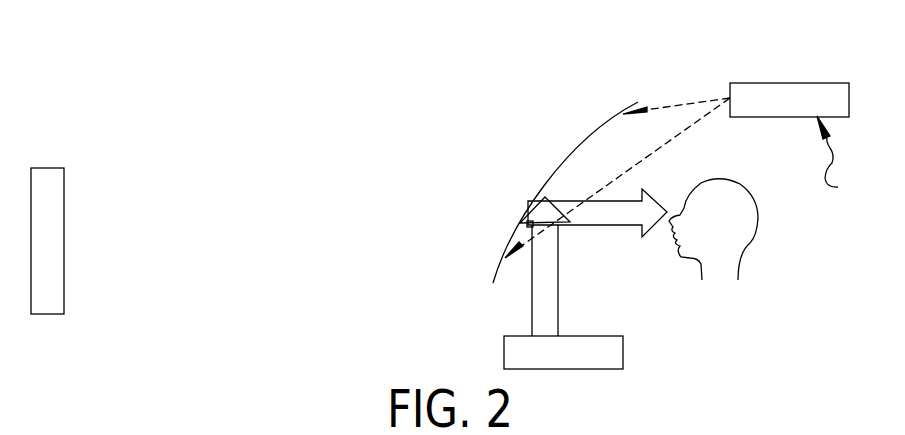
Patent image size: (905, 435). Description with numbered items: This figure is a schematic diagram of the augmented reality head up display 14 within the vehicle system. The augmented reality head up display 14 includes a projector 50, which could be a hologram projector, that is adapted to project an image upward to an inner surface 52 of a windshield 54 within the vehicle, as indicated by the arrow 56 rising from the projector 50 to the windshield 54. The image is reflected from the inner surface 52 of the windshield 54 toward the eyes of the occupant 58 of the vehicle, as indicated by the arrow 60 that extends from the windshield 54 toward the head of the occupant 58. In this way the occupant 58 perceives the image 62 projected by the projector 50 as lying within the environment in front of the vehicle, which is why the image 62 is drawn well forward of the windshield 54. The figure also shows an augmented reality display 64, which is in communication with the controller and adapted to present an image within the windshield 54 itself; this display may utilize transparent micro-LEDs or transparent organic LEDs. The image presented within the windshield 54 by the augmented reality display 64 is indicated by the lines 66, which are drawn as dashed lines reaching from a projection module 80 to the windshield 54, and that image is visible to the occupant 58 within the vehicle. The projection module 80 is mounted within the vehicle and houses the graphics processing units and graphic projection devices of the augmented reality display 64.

The augmented reality head up display 14 is at (352, 53).
The projector 50 is at (550, 363).
The inner surface 52 is at (498, 272).
The windshield 54 is at (496, 223).
The arrow 56 is at (558, 287).
The occupant 58 is at (705, 233).
The arrow 60 is at (590, 226).
The image 62 is at (60, 253).
The augmented reality display 64 is at (842, 158).
The lines 66 is at (682, 102).
The projection module 80 is at (777, 111).